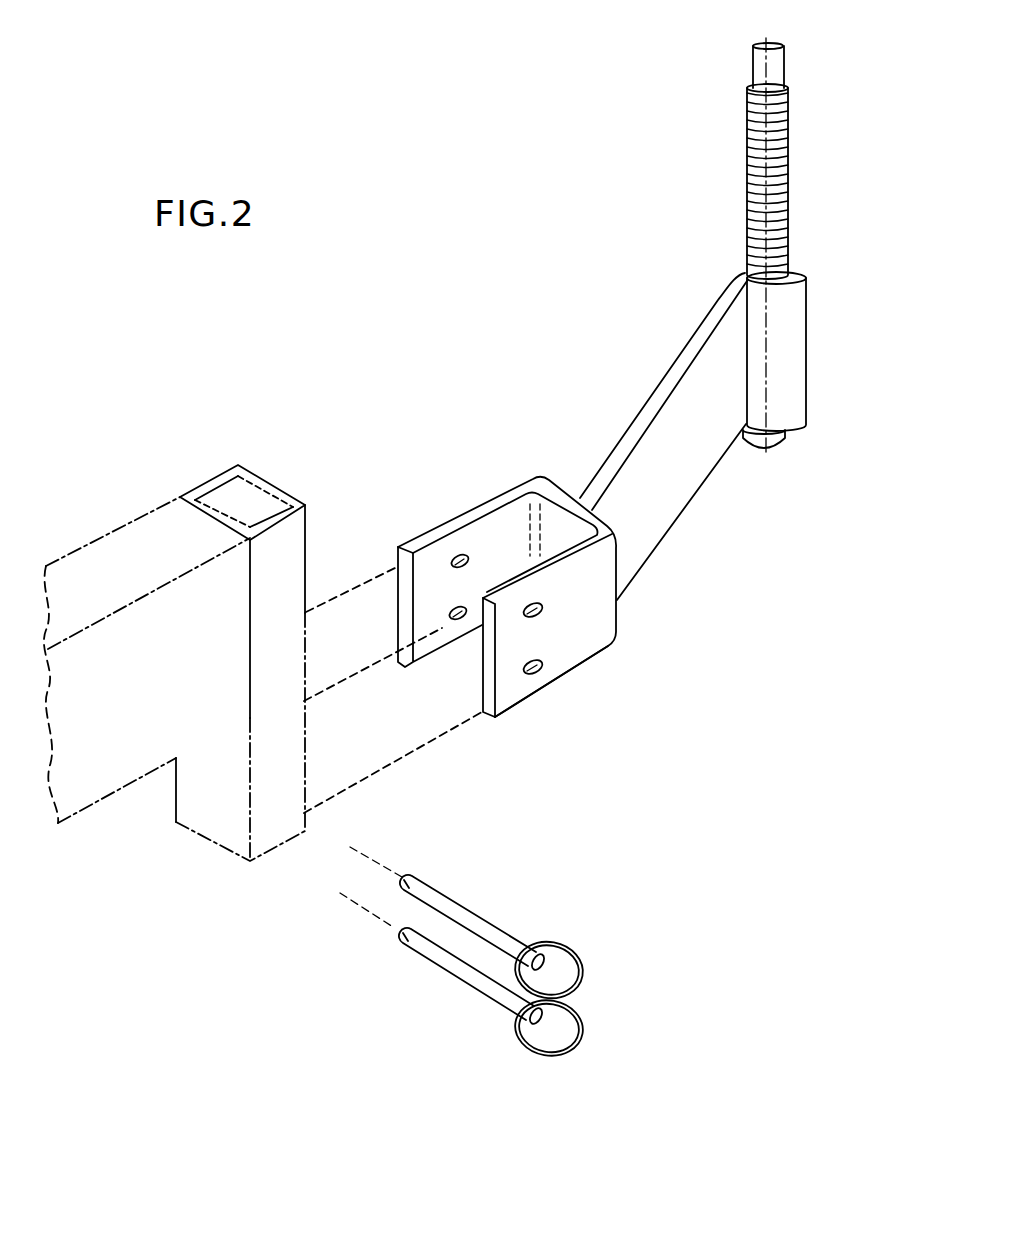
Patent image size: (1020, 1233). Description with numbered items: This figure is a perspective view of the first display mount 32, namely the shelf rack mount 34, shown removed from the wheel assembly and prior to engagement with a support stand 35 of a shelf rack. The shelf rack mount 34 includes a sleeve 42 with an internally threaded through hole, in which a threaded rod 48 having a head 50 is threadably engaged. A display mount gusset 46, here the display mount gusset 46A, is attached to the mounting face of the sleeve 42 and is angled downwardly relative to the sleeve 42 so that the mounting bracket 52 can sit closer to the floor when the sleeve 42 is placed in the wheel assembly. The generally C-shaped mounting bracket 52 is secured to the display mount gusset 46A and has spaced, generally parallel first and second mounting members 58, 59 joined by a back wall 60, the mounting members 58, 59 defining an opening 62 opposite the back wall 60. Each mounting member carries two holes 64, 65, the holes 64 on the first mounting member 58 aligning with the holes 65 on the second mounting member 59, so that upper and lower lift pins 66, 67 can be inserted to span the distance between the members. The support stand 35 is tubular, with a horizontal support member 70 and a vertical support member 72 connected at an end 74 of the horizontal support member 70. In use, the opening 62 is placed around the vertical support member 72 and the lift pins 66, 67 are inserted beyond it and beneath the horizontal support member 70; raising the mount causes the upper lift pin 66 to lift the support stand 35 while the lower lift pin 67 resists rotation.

The first display mount 32 is at (696, 311).
The shelf rack mount 34 is at (541, 598).
The support stand 35 is at (262, 619).
The sleeve 42 is at (797, 348).
The display mount gusset 46 is at (698, 436).
The display mount gusset 46A is at (692, 477).
The threaded rod 48 is at (751, 167).
The head 50 is at (751, 71).
The mounting bracket 52 is at (518, 598).
The first mounting member 58 is at (500, 533).
The second mounting member 59 is at (573, 650).
The back wall 60 is at (560, 523).
The opening 62 is at (450, 612).
The holes 64 is at (460, 556).
The holes 65 is at (525, 617).
The upper lift pin 66 is at (473, 923).
The lower lift pin 67 is at (470, 977).
The horizontal support member 70 is at (121, 580).
The vertical support member 72 is at (291, 538).
The end 74 is at (240, 650).